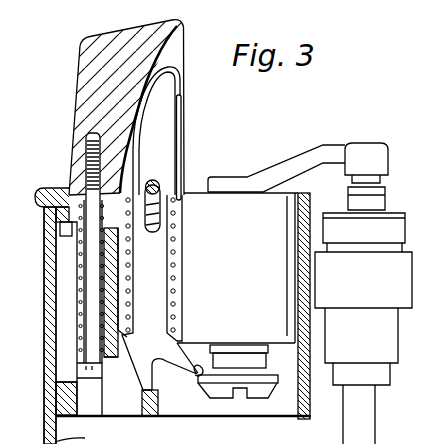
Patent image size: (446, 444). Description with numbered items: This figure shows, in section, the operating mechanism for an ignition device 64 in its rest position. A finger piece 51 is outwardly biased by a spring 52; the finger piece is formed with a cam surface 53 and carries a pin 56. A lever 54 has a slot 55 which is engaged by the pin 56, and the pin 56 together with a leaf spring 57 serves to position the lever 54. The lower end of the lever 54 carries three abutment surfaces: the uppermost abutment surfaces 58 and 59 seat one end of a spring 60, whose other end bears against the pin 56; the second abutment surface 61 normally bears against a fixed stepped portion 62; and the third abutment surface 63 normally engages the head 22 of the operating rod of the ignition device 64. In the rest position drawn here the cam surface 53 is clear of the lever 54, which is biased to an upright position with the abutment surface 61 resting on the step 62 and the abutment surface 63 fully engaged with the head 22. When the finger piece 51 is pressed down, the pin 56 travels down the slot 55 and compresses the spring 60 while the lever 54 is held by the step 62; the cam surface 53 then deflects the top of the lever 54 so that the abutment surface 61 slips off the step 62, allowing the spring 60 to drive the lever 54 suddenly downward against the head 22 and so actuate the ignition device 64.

The head 22 is at (253, 392).
The finger piece 51 is at (163, 37).
The spring 52 is at (77, 240).
The cam surface 53 is at (165, 48).
The lever 54 is at (157, 124).
The slot 55 is at (157, 182).
The pin 56 is at (178, 172).
The leaf spring 57 is at (183, 101).
The abutment surface 58 is at (127, 330).
The abutment surface 59 is at (180, 322).
The spring 60 is at (180, 235).
The second abutment surface 61 is at (140, 393).
The fixed stepped portion 62 is at (152, 417).
The third abutment surface 63 is at (191, 377).
The ignition device 64 is at (243, 306).